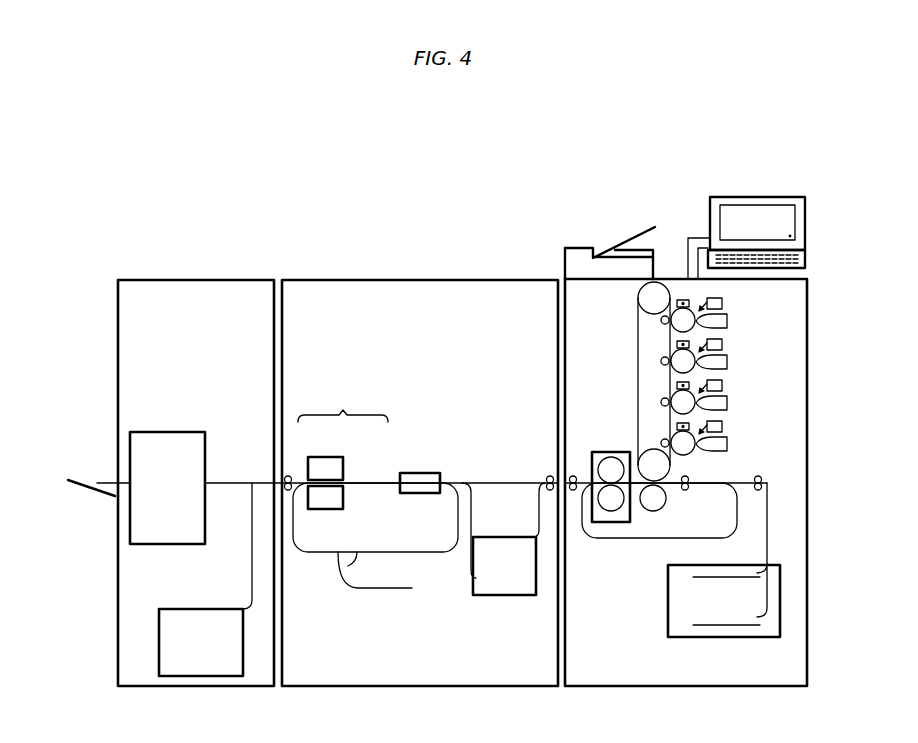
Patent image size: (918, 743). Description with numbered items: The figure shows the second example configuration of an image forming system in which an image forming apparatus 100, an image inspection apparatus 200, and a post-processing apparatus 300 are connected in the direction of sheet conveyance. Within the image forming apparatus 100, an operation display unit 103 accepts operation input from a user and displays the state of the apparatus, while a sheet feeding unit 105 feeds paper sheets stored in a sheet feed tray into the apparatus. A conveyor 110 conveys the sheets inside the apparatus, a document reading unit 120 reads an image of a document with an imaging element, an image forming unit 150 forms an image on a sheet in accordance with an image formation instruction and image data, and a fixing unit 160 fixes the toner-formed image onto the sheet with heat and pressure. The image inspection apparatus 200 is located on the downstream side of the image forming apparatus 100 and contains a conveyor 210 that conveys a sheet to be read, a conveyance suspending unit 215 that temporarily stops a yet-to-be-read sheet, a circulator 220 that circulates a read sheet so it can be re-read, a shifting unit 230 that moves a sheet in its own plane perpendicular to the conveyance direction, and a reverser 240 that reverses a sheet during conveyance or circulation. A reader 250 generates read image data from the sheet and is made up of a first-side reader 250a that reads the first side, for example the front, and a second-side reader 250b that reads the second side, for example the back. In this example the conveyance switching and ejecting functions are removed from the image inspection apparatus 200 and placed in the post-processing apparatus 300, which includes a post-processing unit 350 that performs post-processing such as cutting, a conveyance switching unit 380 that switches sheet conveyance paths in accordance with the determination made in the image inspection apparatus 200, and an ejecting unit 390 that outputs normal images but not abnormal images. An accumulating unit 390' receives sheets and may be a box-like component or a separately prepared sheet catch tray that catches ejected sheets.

The image forming apparatus 100 is at (670, 279).
The operation display unit 103 is at (742, 197).
The sheet feeding unit 105 is at (700, 603).
The conveyor 110 is at (717, 483).
The document reading unit 120 is at (589, 247).
The image forming unit 150 is at (735, 310).
The fixing unit 160 is at (600, 452).
The image inspection apparatus 200 is at (378, 280).
The conveyor 210 is at (383, 483).
The conveyance suspending unit 215 is at (503, 537).
The circulator 220 is at (387, 552).
The shifting unit 230 is at (420, 473).
The reverser 240 is at (381, 588).
The reader 250 is at (343, 405).
The first-side reader 250a is at (321, 457).
The second-side reader 250b is at (345, 497).
The post-processing apparatus 300 is at (178, 280).
The post-processing unit 350 is at (169, 432).
The conveyance switching unit 380 is at (247, 485).
The ejecting unit 390 is at (91, 470).
The accumulating unit 390' is at (201, 622).